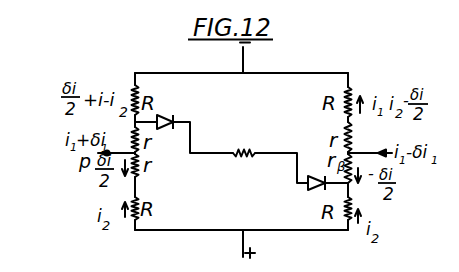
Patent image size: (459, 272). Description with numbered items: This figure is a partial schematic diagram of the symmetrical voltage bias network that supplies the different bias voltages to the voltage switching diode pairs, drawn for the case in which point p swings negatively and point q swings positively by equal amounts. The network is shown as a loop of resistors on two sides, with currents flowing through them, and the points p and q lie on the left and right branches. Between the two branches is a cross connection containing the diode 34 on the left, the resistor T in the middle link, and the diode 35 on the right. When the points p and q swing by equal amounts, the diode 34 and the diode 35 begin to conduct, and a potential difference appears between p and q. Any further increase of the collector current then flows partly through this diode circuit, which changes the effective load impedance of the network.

The diode 34 is at (178, 109).
The diode 35 is at (292, 188).
The resistor T is at (245, 142).